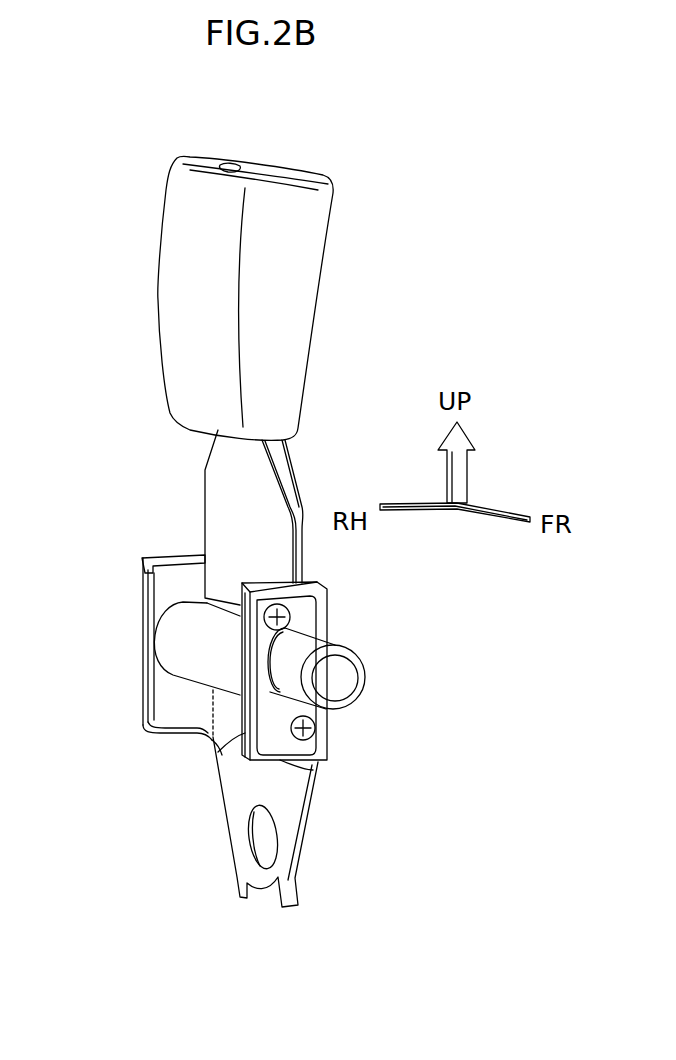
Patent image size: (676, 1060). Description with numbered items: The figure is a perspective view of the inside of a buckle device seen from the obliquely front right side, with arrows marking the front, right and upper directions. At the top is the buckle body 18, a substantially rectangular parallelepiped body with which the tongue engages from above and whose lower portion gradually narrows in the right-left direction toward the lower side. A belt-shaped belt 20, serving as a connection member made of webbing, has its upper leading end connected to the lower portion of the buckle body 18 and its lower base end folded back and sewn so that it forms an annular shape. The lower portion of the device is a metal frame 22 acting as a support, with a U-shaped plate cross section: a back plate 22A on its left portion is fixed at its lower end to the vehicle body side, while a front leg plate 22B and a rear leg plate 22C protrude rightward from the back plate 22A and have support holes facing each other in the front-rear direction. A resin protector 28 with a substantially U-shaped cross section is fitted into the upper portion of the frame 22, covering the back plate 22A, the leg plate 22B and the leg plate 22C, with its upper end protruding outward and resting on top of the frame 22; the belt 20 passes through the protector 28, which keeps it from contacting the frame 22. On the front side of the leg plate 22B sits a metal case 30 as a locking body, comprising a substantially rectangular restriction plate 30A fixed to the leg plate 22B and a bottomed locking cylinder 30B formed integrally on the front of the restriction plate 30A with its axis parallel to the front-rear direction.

The buckle body 18 is at (327, 282).
The belt 20 is at (205, 500).
The frame 22 is at (160, 730).
The back plate 22A is at (228, 825).
The leg plate 22B is at (213, 753).
The leg plate 22C is at (145, 695).
The protector 28 is at (157, 558).
The case 30 is at (290, 760).
The restriction plate 30A is at (307, 617).
The locking cylinder 30B is at (333, 718).